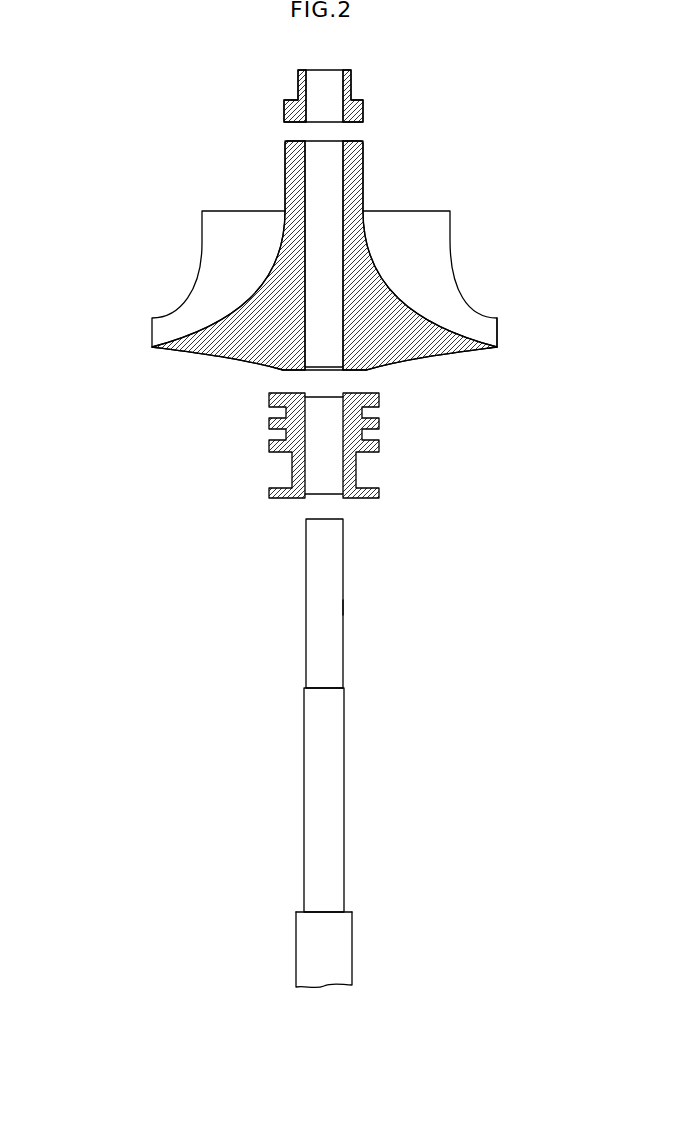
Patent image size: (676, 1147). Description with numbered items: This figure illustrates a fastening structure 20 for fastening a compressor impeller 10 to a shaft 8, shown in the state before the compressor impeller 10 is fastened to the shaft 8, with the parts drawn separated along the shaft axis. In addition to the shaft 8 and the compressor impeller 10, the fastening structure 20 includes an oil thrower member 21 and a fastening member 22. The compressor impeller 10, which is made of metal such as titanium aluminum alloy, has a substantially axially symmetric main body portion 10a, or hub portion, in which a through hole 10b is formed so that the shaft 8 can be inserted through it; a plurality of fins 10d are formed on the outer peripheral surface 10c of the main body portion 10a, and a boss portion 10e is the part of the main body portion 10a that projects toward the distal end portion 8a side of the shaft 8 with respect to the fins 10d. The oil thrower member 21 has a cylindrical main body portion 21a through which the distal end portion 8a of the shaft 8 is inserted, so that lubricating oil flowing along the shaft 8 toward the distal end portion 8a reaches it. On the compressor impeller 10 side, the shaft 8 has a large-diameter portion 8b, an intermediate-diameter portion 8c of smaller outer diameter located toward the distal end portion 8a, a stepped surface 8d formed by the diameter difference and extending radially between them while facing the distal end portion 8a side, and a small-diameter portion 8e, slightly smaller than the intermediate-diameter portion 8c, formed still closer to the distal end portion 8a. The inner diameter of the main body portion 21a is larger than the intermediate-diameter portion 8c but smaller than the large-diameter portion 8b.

The fastening structure 20 is at (55, 146).
The fastening member 22 is at (298, 90).
The compressor impeller 10 is at (146, 244).
The main body portion 10a is at (428, 325).
The through hole 10b is at (307, 207).
The outer peripheral surface 10c is at (412, 313).
The fins 10d is at (452, 251).
The boss portion 10e is at (365, 171).
The oil thrower member 21 is at (220, 424).
The main body portion 21a is at (292, 467).
The shaft 8 is at (270, 601).
The distal end portion 8a is at (343, 542).
The large-diameter portion 8b is at (353, 963).
The intermediate-diameter portion 8c is at (345, 788).
The stepped surface 8d is at (345, 912).
The small-diameter portion 8e is at (343, 607).